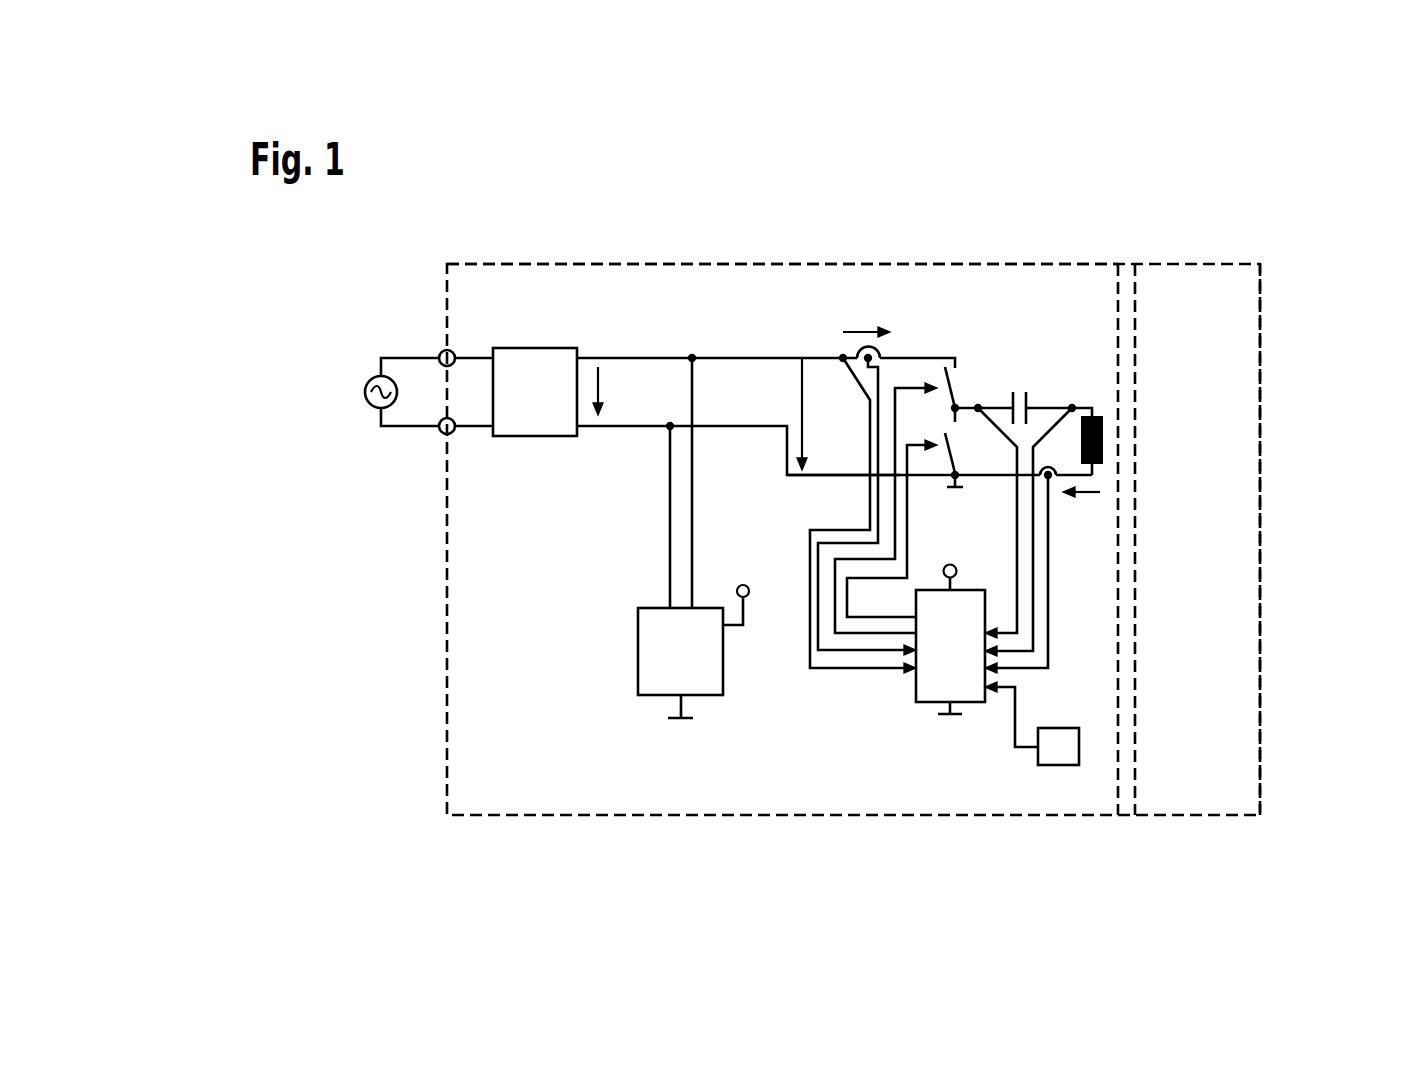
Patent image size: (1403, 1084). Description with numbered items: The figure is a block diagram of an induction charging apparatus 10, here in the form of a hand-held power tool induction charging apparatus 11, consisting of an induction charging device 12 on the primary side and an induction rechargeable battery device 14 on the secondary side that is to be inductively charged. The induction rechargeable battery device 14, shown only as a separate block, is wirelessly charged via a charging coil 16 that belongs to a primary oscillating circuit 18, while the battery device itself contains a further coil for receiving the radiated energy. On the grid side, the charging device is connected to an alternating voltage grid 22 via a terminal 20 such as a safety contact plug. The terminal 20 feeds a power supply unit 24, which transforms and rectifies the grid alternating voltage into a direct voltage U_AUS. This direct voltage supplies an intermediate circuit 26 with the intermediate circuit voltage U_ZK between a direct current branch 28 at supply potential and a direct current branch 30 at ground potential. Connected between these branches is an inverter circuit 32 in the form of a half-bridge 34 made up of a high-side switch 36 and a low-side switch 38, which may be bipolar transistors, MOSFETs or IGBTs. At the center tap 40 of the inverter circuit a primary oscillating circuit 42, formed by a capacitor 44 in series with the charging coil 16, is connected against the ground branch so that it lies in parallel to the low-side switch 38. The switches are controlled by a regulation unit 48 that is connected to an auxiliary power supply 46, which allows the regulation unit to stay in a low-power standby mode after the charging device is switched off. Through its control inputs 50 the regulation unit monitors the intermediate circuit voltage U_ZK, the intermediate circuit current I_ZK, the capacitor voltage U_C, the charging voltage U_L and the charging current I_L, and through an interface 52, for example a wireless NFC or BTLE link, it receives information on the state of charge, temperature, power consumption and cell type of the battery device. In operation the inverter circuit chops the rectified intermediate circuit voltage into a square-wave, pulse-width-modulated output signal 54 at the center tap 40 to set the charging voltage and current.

The induction charging apparatus 10 is at (853, 476).
The hand-held power tool induction charging apparatus 11 is at (1126, 539).
The induction charging device 12 is at (642, 264).
The induction rechargeable battery device 14 is at (1260, 462).
The charging coil 16 is at (1102, 440).
The primary oscillating circuit 18 is at (1085, 381).
The terminal 20 is at (434, 340).
The alternating voltage grid 22 is at (365, 392).
The power supply unit 24 is at (523, 436).
The intermediate circuit 26 is at (777, 339).
The direct current branch 28 is at (907, 357).
The direct current branch 30 is at (835, 475).
The inverter circuit 32 is at (950, 291).
The half-bridge 34 is at (950, 387).
The high-side switch 36 is at (957, 406).
The low-side switch 38 is at (946, 456).
The center tap 40 is at (1027, 341).
The primary oscillating circuit 42 is at (958, 407).
The capacitor 44 is at (1030, 400).
The auxiliary power supply 46 is at (638, 650).
The regulation unit 48 is at (973, 703).
The control inputs 50 is at (1017, 553).
The interface 52 is at (1057, 767).
The output signal 54 is at (972, 430).